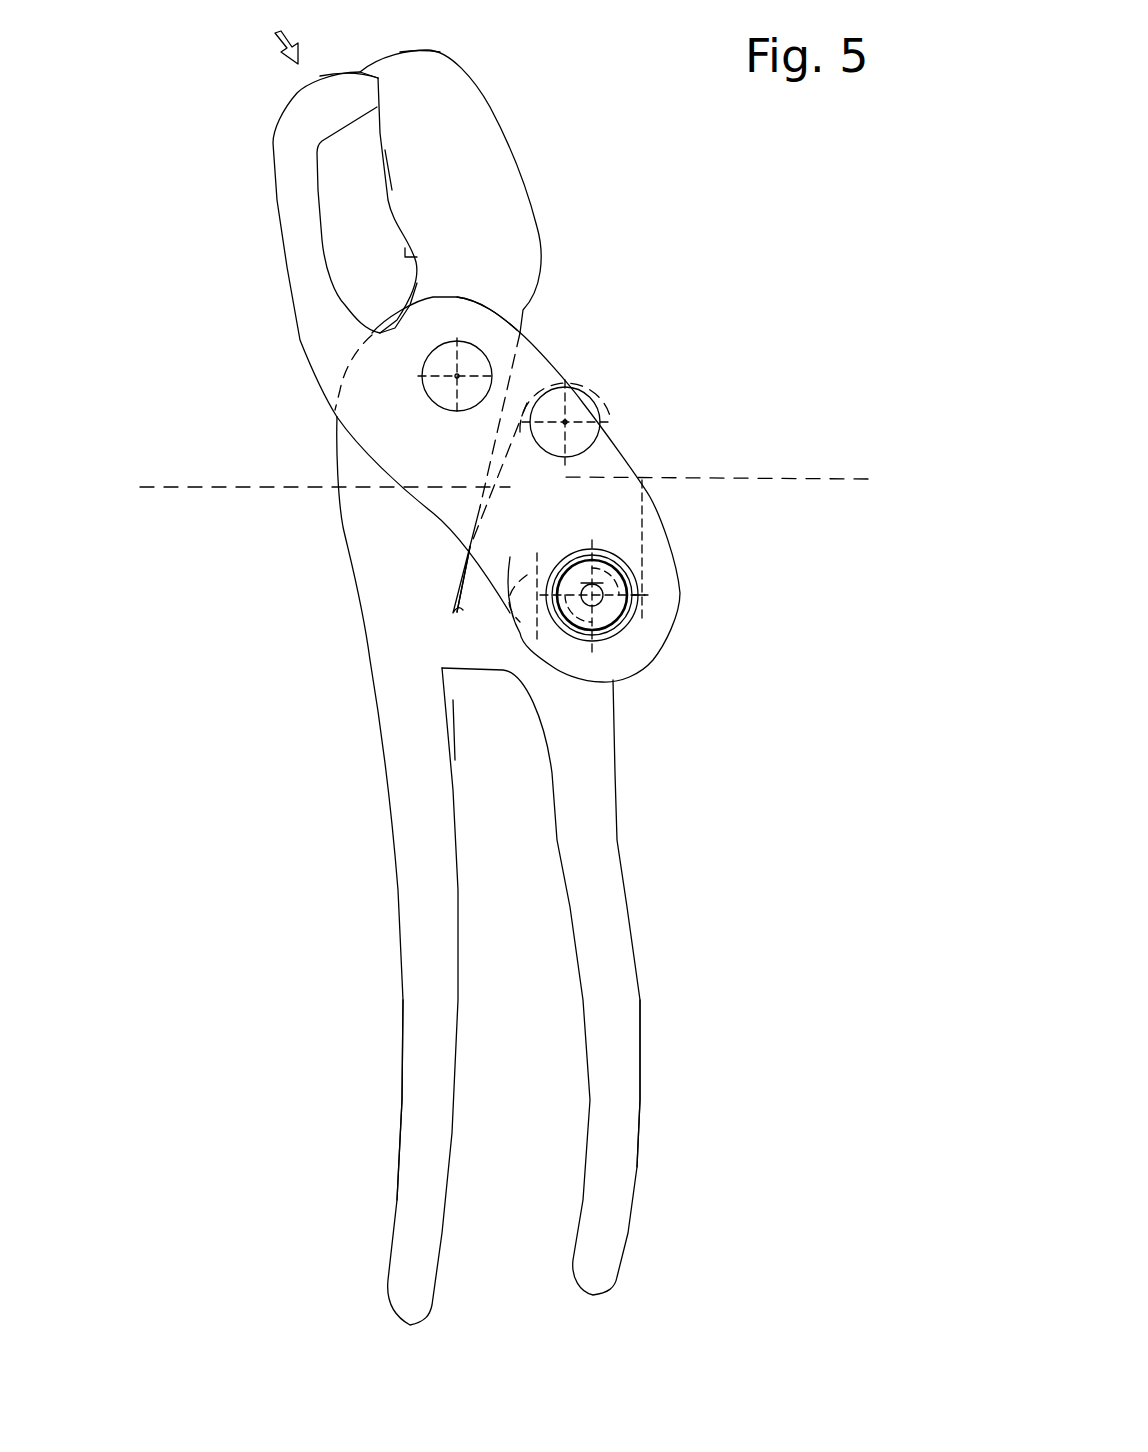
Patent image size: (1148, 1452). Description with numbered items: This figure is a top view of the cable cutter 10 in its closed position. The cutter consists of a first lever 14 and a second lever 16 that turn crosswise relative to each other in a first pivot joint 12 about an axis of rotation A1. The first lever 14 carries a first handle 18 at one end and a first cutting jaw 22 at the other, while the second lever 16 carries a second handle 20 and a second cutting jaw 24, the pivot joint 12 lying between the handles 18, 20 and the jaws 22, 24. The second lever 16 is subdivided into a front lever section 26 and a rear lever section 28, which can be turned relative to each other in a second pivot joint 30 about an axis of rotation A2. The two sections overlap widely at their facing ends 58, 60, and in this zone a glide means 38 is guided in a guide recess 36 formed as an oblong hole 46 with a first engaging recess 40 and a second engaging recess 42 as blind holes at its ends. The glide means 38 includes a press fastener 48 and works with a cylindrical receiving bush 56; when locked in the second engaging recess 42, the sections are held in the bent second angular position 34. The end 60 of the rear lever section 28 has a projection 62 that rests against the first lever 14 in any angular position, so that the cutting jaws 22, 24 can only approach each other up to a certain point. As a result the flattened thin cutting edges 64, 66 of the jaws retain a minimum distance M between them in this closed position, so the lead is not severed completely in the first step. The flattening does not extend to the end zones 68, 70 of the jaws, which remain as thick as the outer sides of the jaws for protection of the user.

The cable cutter 10 is at (280, 36).
The first pivot joint 12 is at (450, 371).
The first lever 14 is at (430, 787).
The second lever 16 is at (582, 820).
The first handle 18 is at (425, 1085).
The second handle 20 is at (613, 1178).
The first cutting jaw 22 is at (475, 165).
The second cutting jaw 24 is at (312, 244).
The front lever section 26 is at (483, 338).
The rear lever section 28 is at (546, 477).
The second pivot joint 30 is at (573, 437).
The second angular position 34 is at (592, 692).
The guide recess 36 is at (546, 597).
The oblong hole 46 is at (546, 597).
The glide means 38 is at (586, 581).
The first engaging recess 40 is at (522, 573).
The second engaging recess 42 is at (605, 578).
The press fastener 48 is at (607, 553).
The cylindrical receiving bush 56 is at (630, 610).
The end of front lever section 58 is at (514, 523).
The end of rear lever section 60 is at (524, 487).
The projection 62 is at (475, 637).
The cutting edge 64 is at (398, 175).
The cutting edge 66 is at (367, 186).
The end zone 68 is at (403, 62).
The end zone 70 is at (355, 83).
The axis of rotation A1 is at (455, 377).
The axis of rotation A2 is at (567, 422).
The minimum distance M is at (405, 248).